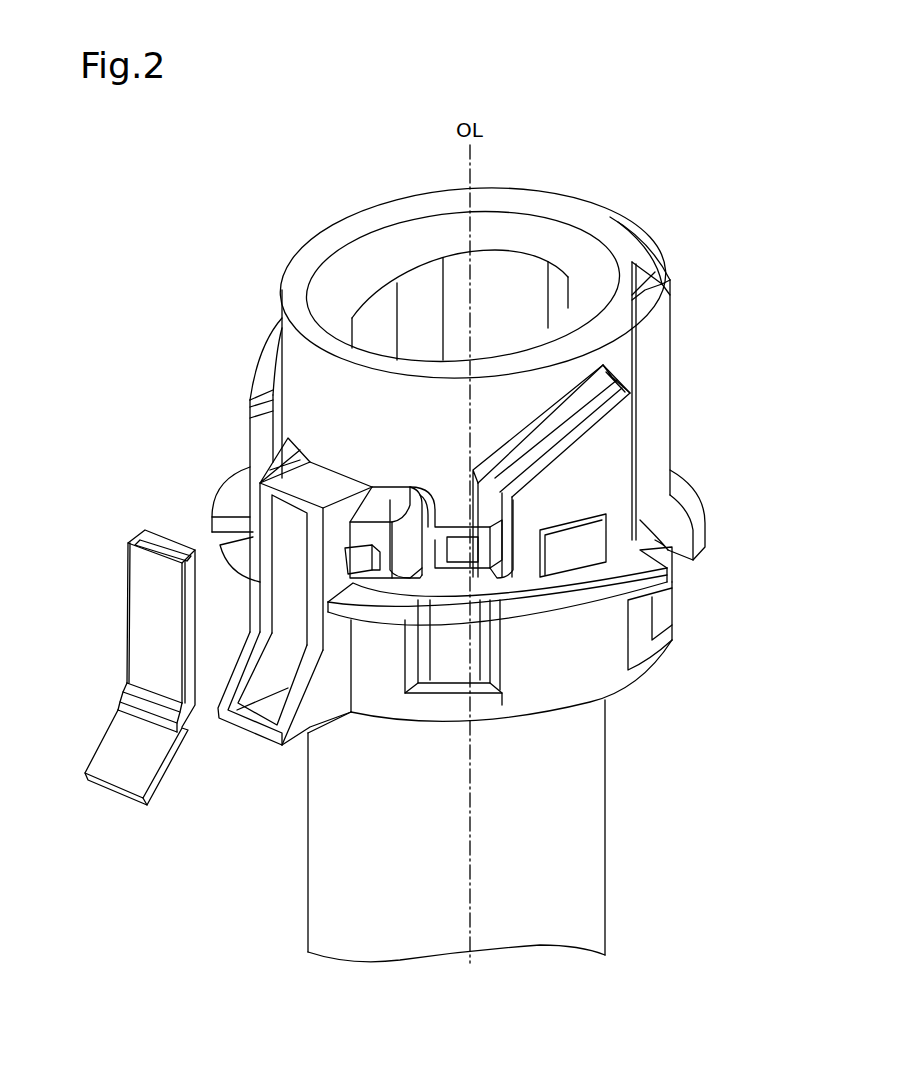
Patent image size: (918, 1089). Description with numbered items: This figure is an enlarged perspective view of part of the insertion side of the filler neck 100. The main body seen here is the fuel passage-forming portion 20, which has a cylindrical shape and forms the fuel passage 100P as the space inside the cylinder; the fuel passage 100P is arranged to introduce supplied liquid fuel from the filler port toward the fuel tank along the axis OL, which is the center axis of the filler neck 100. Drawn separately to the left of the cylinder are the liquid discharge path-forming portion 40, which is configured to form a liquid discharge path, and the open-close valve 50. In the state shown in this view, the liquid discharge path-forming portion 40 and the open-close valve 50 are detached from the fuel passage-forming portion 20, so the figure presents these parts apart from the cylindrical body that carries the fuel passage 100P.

The filler neck 100 is at (694, 183).
The fuel passage 100P is at (503, 330).
The fuel passage-forming portion 20 is at (652, 400).
The liquid discharge path-forming portion 40 is at (127, 598).
The open-close valve 50 is at (113, 733).